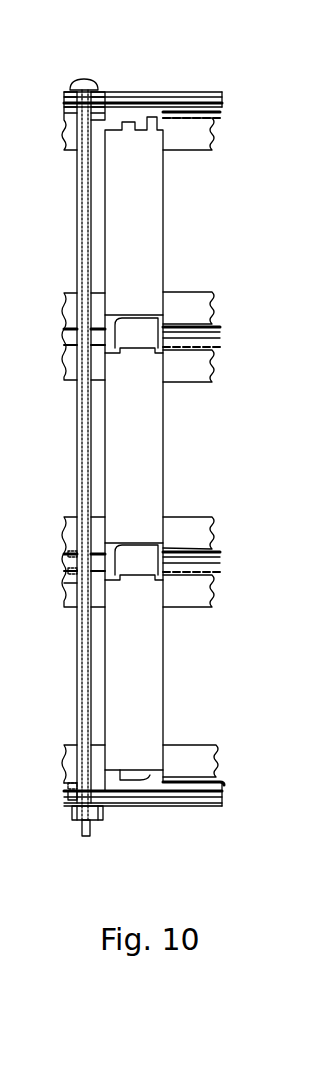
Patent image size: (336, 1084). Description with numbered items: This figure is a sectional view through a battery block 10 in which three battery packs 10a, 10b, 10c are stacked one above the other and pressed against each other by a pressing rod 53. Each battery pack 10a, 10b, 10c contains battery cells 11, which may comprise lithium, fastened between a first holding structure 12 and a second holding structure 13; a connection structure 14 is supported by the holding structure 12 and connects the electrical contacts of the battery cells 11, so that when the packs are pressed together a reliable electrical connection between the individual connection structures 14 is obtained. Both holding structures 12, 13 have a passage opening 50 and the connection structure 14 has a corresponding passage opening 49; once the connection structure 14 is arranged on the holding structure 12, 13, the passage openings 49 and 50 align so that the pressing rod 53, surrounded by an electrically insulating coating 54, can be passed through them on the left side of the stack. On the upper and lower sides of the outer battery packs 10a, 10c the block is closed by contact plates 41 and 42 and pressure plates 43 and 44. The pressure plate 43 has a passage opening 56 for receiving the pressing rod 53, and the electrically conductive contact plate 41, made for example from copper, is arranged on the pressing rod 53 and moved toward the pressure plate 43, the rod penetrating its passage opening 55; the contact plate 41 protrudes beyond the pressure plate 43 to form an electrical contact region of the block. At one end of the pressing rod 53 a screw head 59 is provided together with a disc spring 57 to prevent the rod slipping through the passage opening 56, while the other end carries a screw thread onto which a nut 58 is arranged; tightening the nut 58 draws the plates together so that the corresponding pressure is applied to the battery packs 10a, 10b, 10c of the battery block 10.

The battery block 10 is at (312, 233).
The battery pack 10a is at (58, 650).
The battery pack 10b is at (57, 376).
The battery pack 10c is at (25, 192).
The battery cell 11 is at (155, 232).
The first holding structure 12 is at (213, 143).
The second holding structure 13 is at (214, 297).
The connection structure 14 is at (215, 112).
The contact plate 41 is at (224, 806).
The contact plate 42 is at (193, 103).
The pressure plate 43 is at (190, 802).
The pressure plate 44 is at (166, 91).
The passage opening 49 is at (68, 554).
The passage opening 50 is at (77, 600).
The pressing rod 53 is at (82, 828).
The electrically insulating coating 54 is at (77, 246).
The passage opening 55 is at (68, 795).
The passage opening 56 is at (72, 812).
The disc spring 57 is at (98, 93).
The nut 58 is at (104, 815).
The screw head 59 is at (92, 80).